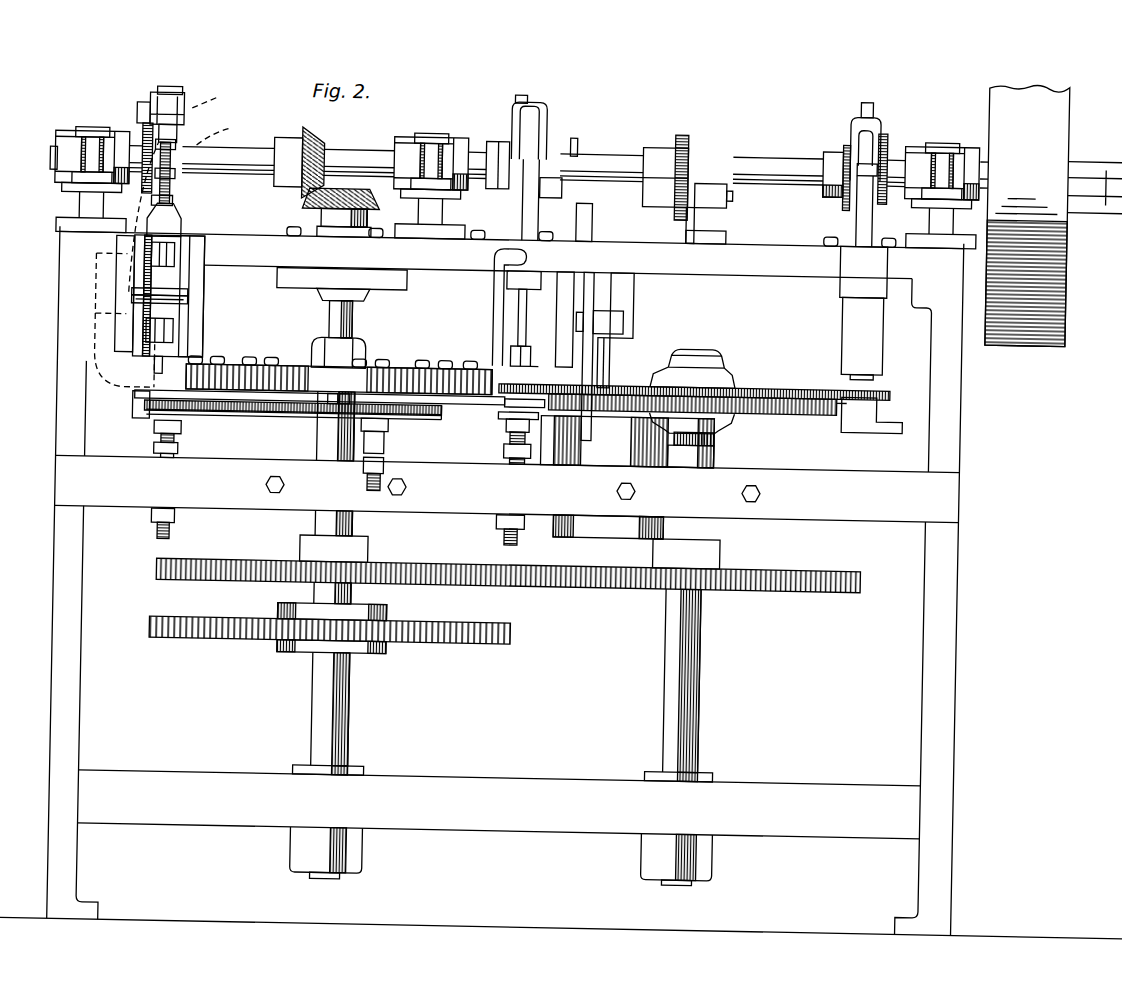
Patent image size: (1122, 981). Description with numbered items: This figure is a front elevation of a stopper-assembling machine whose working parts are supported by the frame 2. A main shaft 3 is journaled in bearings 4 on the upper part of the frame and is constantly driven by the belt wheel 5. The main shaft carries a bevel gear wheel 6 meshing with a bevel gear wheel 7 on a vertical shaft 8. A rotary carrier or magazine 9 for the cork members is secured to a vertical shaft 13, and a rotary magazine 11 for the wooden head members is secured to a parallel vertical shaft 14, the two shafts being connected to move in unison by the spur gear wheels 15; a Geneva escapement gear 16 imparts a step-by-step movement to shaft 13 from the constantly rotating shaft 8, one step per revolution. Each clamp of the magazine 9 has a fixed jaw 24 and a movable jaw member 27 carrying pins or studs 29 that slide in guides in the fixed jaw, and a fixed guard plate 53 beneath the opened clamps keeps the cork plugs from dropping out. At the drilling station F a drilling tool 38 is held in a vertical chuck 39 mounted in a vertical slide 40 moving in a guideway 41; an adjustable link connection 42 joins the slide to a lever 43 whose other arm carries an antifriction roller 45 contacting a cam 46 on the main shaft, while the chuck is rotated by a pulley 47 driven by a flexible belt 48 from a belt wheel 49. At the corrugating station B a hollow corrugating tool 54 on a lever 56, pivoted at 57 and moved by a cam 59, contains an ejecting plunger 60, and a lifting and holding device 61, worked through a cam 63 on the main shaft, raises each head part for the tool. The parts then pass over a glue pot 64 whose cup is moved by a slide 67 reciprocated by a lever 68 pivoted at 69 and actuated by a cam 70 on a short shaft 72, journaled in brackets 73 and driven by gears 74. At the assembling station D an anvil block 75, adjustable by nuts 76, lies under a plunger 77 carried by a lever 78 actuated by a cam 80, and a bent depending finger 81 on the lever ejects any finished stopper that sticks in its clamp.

The frame 2 is at (38, 585).
The main shaft 3 is at (44, 168).
The bearings 4 is at (70, 143).
The belt wheel 5 is at (1027, 216).
The bevel gear wheel 6 is at (301, 192).
The bevel gear wheel 7 is at (324, 207).
The vertical shaft 8 is at (328, 319).
The rotary carrier or magazine 9 is at (262, 373).
The rotary magazine or carrier 11 is at (762, 389).
The vertical shaft 13 is at (316, 683).
The vertical shaft 14 is at (668, 686).
The spur gear wheels 15 is at (440, 587).
The Geneva escapement gear 16 is at (393, 646).
The fixed jaw 24 is at (362, 403).
The movable jaw member 27 is at (331, 400).
The pins or studs 29 is at (343, 401).
The drilling tool 38 is at (155, 370).
The vertical chuck 39 is at (146, 328).
The vertical slide 40 is at (185, 330).
The guideway 41 is at (198, 349).
The adjustable link connection 42 is at (173, 192).
The lever 43 is at (165, 99).
The antifriction wheel or roller 45 is at (141, 108).
The cam 46 is at (140, 135).
The pulley 47 is at (184, 299).
The flexible belt 48 is at (184, 307).
The belt wheel 49 is at (186, 231).
The fixed guard plate 53 is at (288, 412).
The corrugating tool 54 is at (862, 310).
The lever 56 is at (852, 118).
The pivot 57 is at (838, 128).
The cam 59 is at (876, 128).
The ejecting plunger or punch 60 is at (872, 372).
The lifting and holding device 61 is at (868, 410).
The cam 63 is at (836, 194).
The glue pot 64 is at (688, 409).
The vertically movable slide 67 is at (596, 372).
The lever 68 is at (587, 226).
The pivot 69 is at (574, 326).
The cam 70 is at (573, 158).
The short shaft 72 is at (642, 198).
The brackets 73 is at (692, 214).
The gears 74 is at (680, 218).
The anvil block 75 is at (508, 422).
The nuts 76 is at (503, 453).
The plunger 77 is at (528, 358).
The lever 78 is at (525, 118).
The cam 80 is at (496, 145).
The bent depending finger 81 is at (490, 321).
The corrugating station B is at (829, 384).
The assembling station D is at (536, 375).
The drilling station F is at (168, 413).